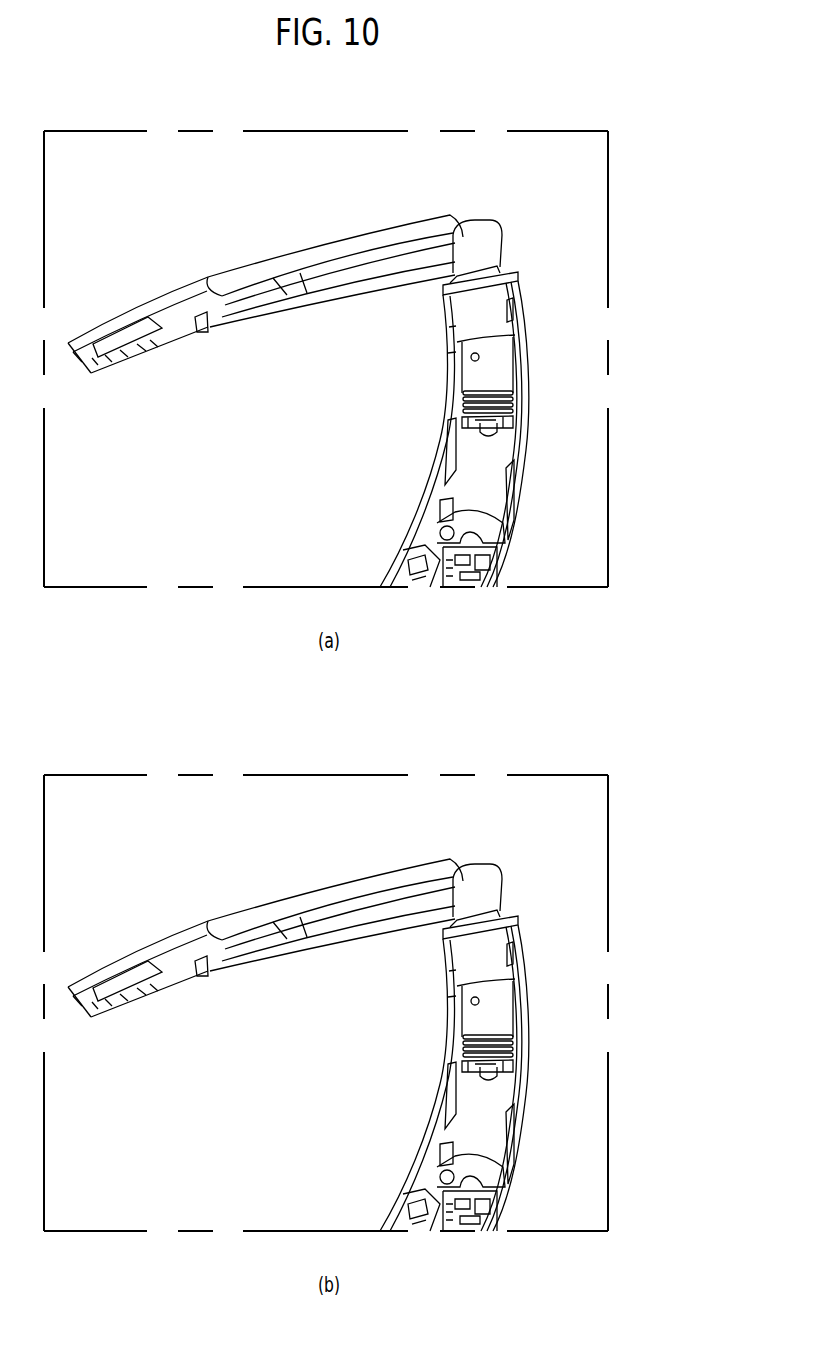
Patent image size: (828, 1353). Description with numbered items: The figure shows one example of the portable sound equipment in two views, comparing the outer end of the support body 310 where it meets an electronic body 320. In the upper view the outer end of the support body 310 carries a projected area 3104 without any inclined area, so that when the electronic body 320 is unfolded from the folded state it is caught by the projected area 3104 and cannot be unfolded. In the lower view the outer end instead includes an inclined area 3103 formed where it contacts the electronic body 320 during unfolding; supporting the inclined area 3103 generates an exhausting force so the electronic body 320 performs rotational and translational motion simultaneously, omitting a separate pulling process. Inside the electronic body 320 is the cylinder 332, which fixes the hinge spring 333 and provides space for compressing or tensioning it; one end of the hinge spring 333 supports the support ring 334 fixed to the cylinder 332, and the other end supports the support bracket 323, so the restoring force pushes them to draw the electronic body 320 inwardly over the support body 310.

The support body 310 is at (408, 258).
The projected area 3104 is at (498, 262).
The inclined area 3103 is at (498, 906).
The electronic body 320 is at (522, 337).
The support bracket 323 is at (497, 385).
The hinge spring 333 is at (513, 417).
The support ring 334 is at (510, 428).
The cylinder 332 is at (487, 427).